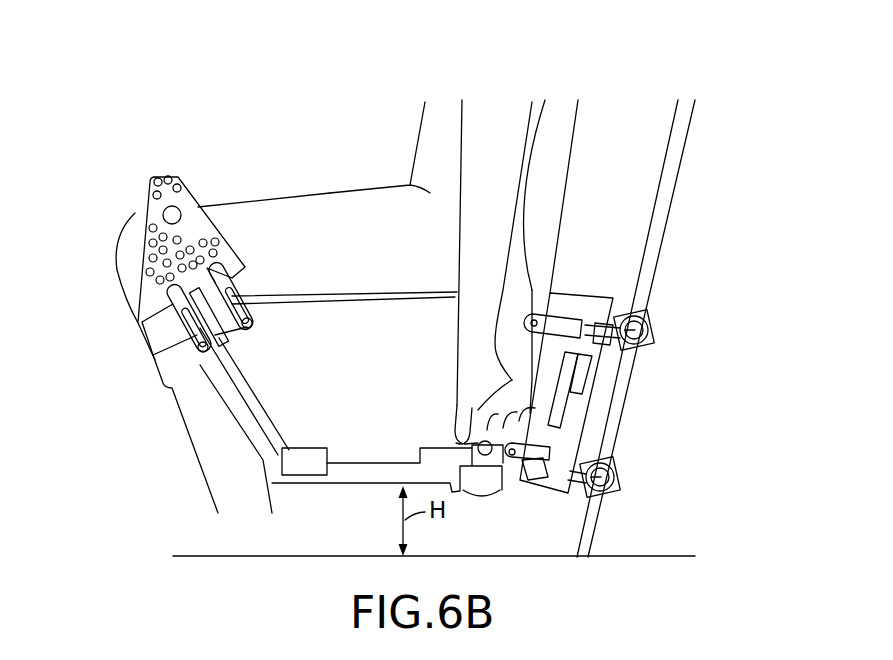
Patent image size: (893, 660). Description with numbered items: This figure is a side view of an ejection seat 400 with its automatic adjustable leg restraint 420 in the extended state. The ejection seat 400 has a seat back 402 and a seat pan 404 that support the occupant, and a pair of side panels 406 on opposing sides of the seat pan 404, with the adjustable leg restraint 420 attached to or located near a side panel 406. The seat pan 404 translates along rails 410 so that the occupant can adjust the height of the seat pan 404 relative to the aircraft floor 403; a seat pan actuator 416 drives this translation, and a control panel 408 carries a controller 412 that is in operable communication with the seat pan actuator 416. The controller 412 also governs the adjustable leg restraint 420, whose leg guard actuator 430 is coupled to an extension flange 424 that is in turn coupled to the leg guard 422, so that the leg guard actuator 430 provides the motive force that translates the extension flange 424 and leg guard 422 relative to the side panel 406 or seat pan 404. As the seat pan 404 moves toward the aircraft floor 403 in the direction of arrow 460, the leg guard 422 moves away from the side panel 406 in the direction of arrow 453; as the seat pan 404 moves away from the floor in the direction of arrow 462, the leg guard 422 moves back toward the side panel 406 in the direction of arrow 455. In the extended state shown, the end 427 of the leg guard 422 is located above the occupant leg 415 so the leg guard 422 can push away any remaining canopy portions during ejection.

The ejection seat 400 is at (662, 97).
The seat back 402 is at (628, 172).
The aircraft floor 403 is at (190, 555).
The seat pan 404 is at (512, 287).
The side panel 406 is at (370, 417).
The control panel 408 is at (468, 423).
The rail 410 is at (662, 210).
The controller 412 is at (487, 450).
The occupant leg 415 is at (275, 200).
The seat pan actuator 416 is at (568, 378).
The adjustable leg restraint 420 is at (128, 229).
The leg guard 422 is at (198, 208).
The extension flange 424 is at (224, 334).
The end 427 is at (160, 176).
The leg guard actuator 430 is at (295, 465).
The arrow 453 is at (261, 361).
The arrow 455 is at (256, 435).
The arrow 460 is at (678, 526).
The arrow 462 is at (652, 432).